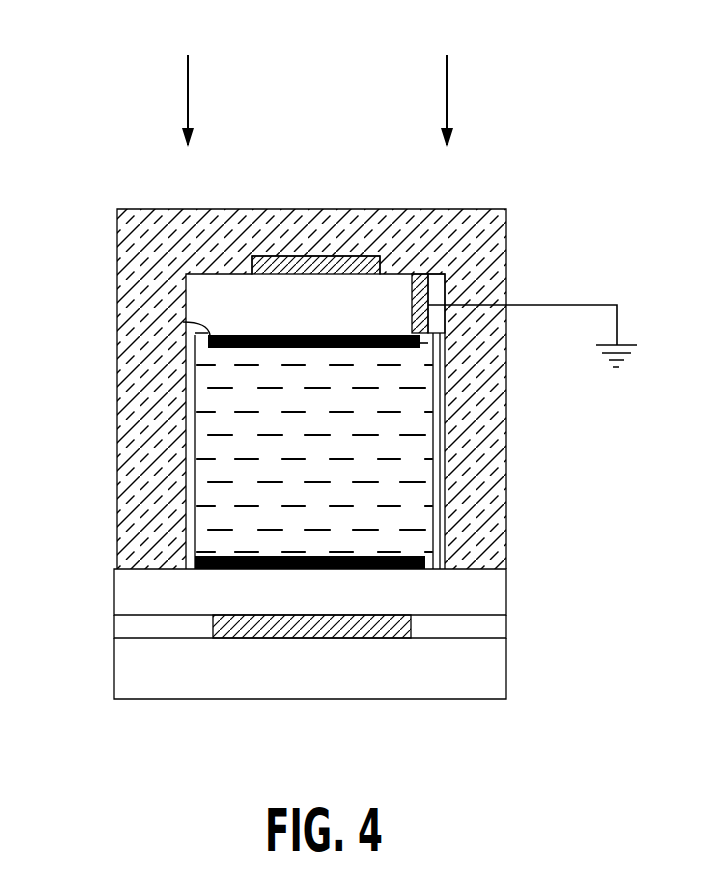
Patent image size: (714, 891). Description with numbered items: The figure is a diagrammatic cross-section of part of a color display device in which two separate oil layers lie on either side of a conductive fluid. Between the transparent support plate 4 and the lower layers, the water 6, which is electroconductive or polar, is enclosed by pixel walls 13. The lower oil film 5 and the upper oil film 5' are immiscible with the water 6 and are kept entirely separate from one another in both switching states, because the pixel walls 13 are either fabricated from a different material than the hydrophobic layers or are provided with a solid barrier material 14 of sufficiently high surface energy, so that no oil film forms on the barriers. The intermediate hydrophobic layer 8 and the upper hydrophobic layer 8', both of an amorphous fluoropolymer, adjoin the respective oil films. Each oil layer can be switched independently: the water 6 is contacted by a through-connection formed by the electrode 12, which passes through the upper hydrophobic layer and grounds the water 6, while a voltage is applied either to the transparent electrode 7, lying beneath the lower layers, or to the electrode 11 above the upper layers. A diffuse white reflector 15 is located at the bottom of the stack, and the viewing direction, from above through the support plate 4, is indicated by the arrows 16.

The second transparent support plate 4 is at (356, 228).
The first fluid 5 is at (310, 661).
The upper oil layer 5' is at (245, 328).
The second fluid 6 is at (410, 400).
The transparent electrode 7 is at (262, 633).
The intermediate hydrophobic layer 8 is at (334, 592).
The upper hydrophobic layer 8' is at (210, 248).
The electrode 11 is at (293, 262).
The electrode 12 is at (418, 280).
The pixel walls 13 is at (145, 453).
The solid barrier material 14 is at (190, 400).
The diffuse white reflector 15 is at (188, 678).
The arrows 16 is at (188, 93).